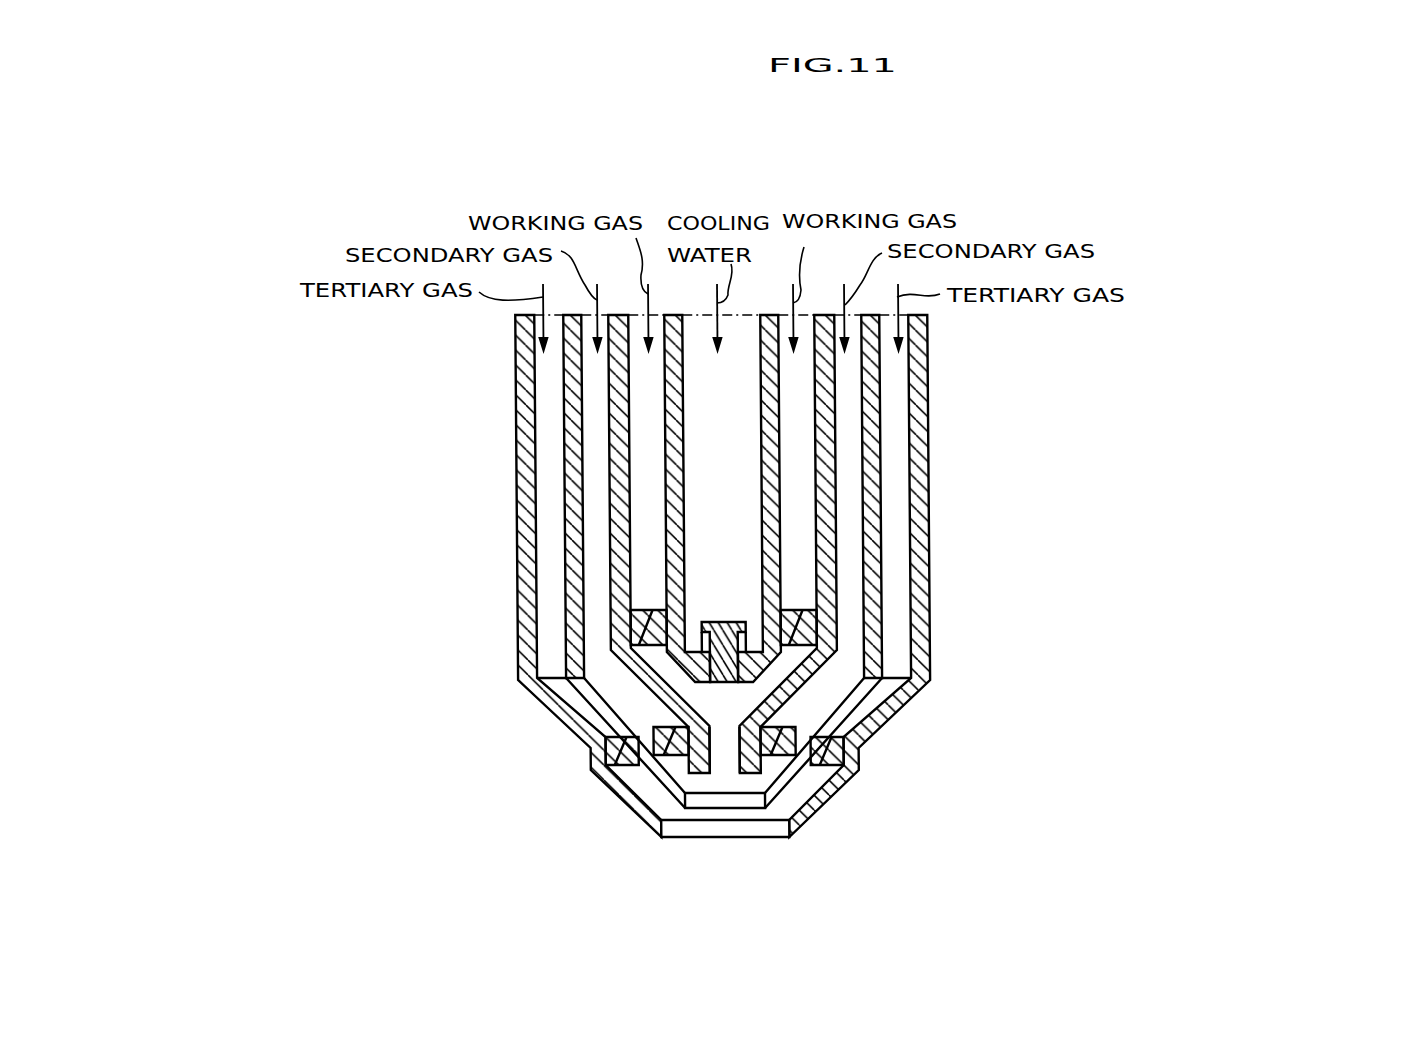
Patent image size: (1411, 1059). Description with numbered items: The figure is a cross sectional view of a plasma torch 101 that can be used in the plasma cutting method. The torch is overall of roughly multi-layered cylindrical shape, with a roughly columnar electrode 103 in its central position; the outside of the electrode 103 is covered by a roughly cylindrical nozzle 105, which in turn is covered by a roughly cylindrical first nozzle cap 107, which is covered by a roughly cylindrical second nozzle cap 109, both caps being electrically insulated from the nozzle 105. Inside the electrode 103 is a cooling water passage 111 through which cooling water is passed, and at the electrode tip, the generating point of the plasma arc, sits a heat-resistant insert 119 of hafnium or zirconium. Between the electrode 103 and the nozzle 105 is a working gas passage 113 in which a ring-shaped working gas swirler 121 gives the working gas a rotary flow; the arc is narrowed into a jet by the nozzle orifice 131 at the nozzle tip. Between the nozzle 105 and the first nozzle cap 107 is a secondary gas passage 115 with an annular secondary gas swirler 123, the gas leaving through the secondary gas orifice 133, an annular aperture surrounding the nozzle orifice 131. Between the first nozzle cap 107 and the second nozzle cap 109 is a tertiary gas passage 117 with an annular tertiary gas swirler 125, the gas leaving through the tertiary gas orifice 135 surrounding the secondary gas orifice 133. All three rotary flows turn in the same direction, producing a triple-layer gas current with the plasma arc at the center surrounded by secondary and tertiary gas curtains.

The plasma torch 101 is at (777, 206).
The electrode 103 is at (778, 412).
The nozzle 105 is at (834, 430).
The first nozzle cap 107 is at (879, 472).
The second nozzle cap 109 is at (927, 502).
The cooling water passage 111 is at (702, 418).
The working gas passage 113 is at (638, 490).
The secondary gas passage 115 is at (593, 545).
The tertiary gas passage 117 is at (552, 612).
The heat-resistant insert 119 is at (744, 623).
The working gas swirler 121 is at (800, 627).
The secondary gas swirler 123 is at (790, 728).
The tertiary gas swirler 125 is at (840, 750).
The nozzle orifice 131 is at (727, 752).
The secondary gas orifice 133 is at (757, 781).
The tertiary gas orifice 135 is at (773, 813).